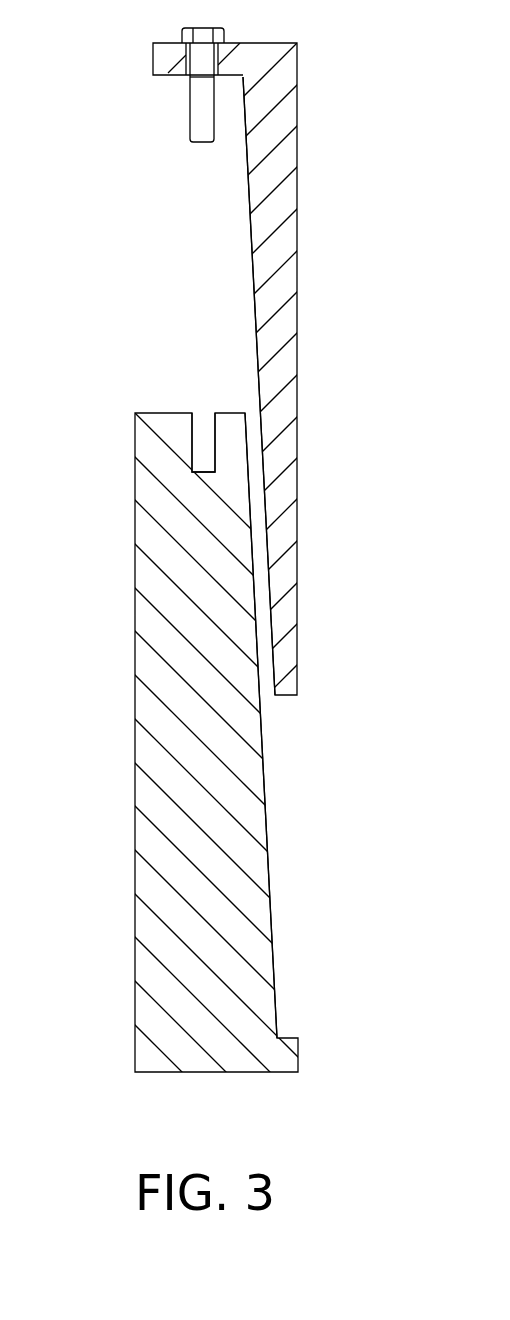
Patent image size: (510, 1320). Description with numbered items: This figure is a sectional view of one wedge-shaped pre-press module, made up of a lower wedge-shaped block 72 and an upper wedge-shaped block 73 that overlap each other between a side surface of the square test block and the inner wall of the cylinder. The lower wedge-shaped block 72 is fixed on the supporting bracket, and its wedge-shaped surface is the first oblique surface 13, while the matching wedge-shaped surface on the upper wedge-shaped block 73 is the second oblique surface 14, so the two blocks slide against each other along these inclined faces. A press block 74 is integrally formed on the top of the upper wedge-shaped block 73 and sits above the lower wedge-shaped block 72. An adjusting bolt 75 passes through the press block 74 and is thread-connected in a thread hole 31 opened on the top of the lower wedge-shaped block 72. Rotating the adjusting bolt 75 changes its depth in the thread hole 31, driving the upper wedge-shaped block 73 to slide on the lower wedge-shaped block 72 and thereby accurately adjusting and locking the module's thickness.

The first oblique surface 13 is at (276, 800).
The second oblique surface 14 is at (248, 265).
The thread hole 31 is at (203, 420).
The lower wedge-shaped block 72 is at (147, 758).
The upper wedge-shaped block 73 is at (298, 300).
The press block 74 is at (162, 57).
The adjusting bolt 75 is at (200, 112).